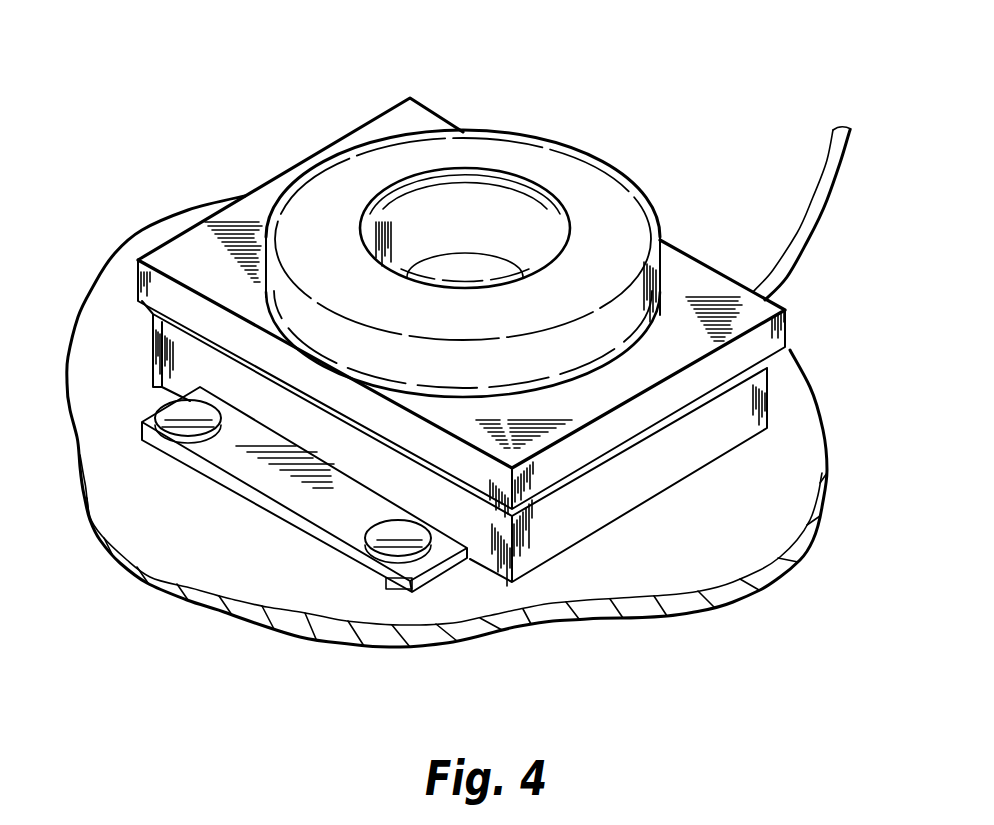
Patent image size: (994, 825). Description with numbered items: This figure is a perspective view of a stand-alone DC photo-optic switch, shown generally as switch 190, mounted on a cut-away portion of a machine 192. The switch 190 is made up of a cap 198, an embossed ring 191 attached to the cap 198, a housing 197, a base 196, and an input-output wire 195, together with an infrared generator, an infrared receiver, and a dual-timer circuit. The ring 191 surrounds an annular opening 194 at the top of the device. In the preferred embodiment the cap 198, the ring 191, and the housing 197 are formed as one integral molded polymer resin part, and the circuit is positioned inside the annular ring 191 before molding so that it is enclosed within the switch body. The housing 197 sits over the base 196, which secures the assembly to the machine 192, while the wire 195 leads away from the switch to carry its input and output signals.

The switch 190 is at (469, 349).
The embossed ring 191 is at (479, 252).
The machine 192 is at (457, 617).
The annular opening 194 is at (473, 267).
The input-output wire 195 is at (816, 227).
The base 196 is at (293, 513).
The housing 197 is at (667, 481).
The cap 198 is at (787, 327).